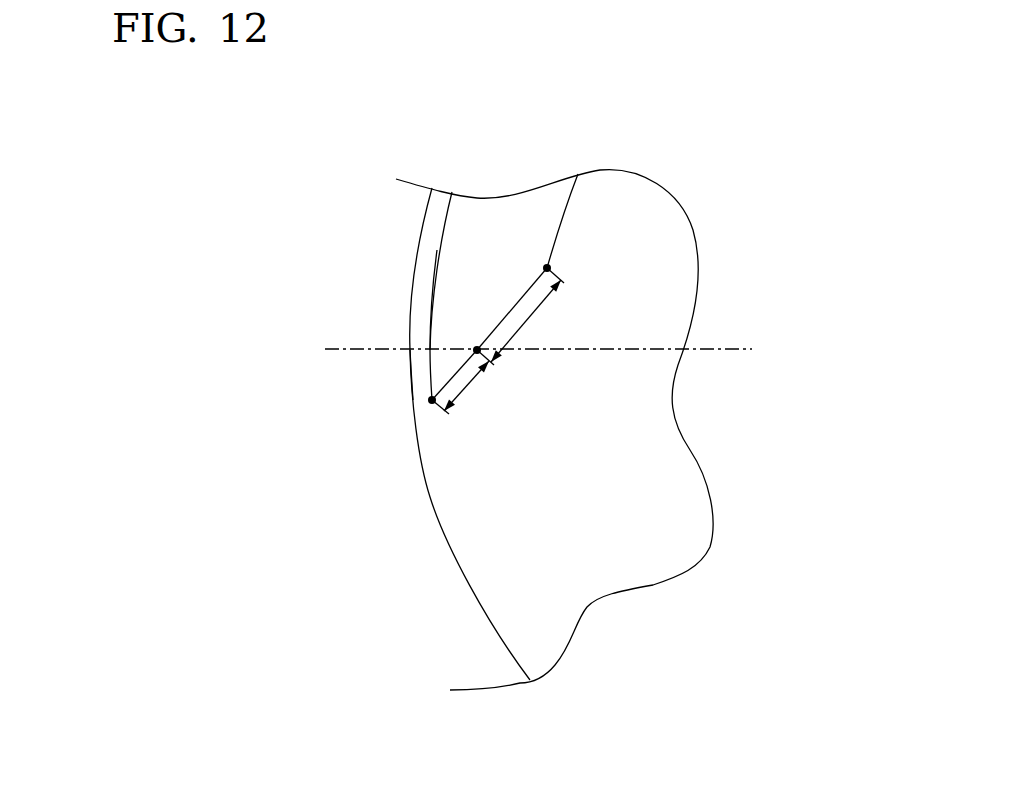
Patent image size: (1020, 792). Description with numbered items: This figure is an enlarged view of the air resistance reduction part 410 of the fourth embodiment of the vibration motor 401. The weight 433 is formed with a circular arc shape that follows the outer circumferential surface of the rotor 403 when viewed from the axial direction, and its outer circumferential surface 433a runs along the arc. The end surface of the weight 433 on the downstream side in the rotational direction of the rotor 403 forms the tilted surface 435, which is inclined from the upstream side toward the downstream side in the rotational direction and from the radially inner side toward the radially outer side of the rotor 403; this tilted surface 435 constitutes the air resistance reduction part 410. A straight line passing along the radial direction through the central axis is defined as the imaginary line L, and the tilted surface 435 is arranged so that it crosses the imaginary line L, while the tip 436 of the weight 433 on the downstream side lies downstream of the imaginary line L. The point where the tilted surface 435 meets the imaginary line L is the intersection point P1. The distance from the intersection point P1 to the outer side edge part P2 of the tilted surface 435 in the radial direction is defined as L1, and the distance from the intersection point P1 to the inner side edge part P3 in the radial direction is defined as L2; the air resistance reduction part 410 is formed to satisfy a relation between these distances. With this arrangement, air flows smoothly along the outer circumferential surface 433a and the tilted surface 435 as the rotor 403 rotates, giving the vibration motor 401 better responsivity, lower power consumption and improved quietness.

The vibration motor 401 is at (291, 162).
The rotor 403 is at (404, 477).
The air resistance reduction part 410 is at (421, 370).
The weight 433 is at (432, 222).
The outer circumferential surface 433a is at (433, 283).
The tilted surface 435 is at (447, 385).
The tip 436 is at (433, 403).
The intersection point P1 is at (477, 348).
The outer side edge part P2 is at (428, 400).
The inner side edge part P3 is at (547, 268).
The distance L1 is at (472, 387).
The distance L2 is at (526, 321).
The imaginary line L is at (703, 350).